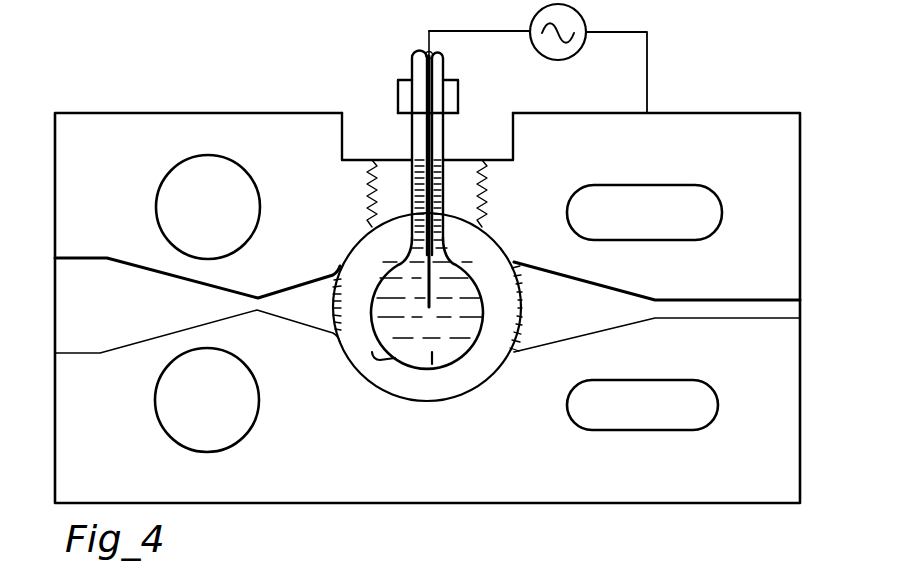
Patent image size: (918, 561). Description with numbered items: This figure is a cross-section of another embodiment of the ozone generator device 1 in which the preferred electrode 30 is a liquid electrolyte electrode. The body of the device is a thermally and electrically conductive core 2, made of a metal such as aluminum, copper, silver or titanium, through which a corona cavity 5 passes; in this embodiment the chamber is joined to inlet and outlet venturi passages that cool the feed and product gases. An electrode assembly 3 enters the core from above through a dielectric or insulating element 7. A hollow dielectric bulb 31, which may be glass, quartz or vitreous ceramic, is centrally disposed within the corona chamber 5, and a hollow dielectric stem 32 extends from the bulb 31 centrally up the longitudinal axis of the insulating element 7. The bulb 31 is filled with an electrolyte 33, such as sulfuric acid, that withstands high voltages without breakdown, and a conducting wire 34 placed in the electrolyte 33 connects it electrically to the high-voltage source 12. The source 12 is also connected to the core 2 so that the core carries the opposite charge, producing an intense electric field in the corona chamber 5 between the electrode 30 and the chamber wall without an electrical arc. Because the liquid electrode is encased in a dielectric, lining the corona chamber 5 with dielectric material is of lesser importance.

The ozone generator device 1 is at (427, 284).
The core 2 is at (775, 164).
The electrode assembly 3 is at (423, 169).
The corona cavity 5 is at (370, 287).
The insulating element 7 is at (458, 135).
The high-voltage source 12 is at (587, 8).
The electrode 30 is at (489, 326).
The hollow dielectric bulb 31 is at (372, 352).
The hollow dielectric stem 32 is at (411, 249).
The electrolyte 33 is at (432, 364).
The conducting wire 34 is at (441, 33).